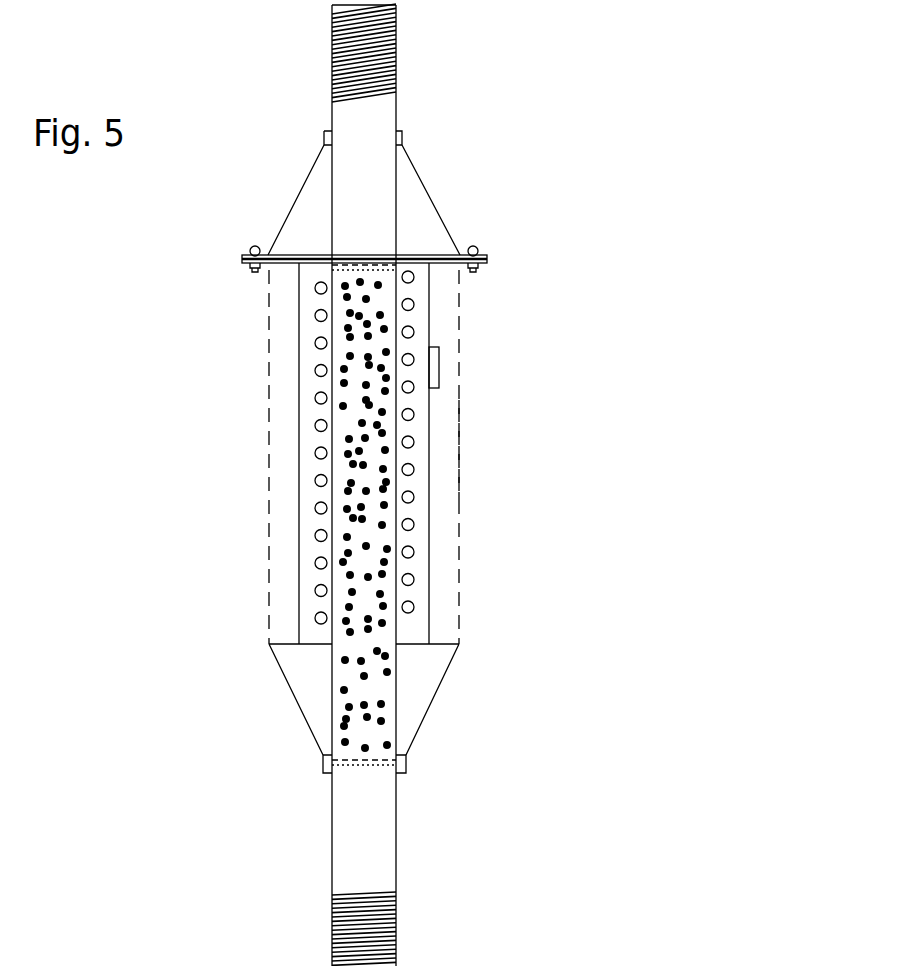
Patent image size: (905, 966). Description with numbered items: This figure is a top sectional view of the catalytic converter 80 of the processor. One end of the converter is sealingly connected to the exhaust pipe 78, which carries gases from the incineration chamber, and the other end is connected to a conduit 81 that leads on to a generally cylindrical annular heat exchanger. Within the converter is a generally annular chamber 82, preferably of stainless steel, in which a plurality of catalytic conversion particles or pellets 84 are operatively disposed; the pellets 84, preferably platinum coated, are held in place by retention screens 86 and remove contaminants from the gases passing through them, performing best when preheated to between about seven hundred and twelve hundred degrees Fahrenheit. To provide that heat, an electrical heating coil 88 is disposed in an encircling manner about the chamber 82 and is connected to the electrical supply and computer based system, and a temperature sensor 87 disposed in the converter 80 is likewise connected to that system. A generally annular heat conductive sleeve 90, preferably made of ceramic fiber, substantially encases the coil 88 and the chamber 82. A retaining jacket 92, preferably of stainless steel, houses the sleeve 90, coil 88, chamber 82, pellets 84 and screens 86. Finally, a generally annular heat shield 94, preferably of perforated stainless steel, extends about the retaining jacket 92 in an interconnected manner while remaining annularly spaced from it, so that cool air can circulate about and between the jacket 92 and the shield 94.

The exhaust pipe 78 is at (397, 860).
The catalytic converter 80 is at (527, 163).
The conduit 81 is at (397, 72).
The annular chamber 82 is at (397, 293).
The catalytic conversion pellets 84 is at (340, 525).
The retention screens 86 is at (362, 263).
The temperature sensor 87 is at (439, 372).
The electrical heating coil 88 is at (322, 452).
The heat conductive sleeve 90 is at (416, 540).
The retaining jacket 92 is at (430, 481).
The heat shield 94 is at (460, 439).